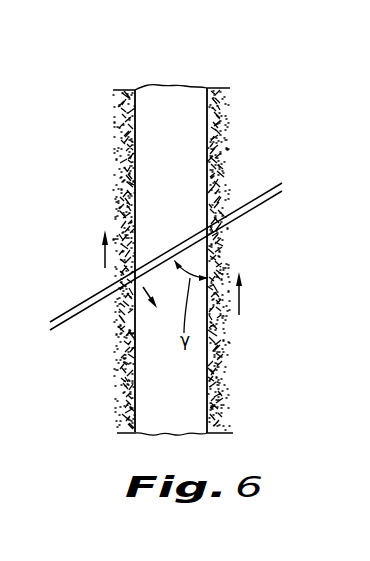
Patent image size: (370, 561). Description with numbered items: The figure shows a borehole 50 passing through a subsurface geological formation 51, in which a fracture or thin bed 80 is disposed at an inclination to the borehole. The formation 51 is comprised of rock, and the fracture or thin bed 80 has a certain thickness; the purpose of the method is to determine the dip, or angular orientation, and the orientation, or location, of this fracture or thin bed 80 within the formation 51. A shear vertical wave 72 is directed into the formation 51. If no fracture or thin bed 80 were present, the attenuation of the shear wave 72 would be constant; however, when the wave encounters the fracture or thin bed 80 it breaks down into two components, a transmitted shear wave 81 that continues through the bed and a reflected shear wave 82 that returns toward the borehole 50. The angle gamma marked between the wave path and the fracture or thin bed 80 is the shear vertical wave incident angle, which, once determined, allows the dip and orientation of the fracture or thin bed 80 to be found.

The borehole 50 is at (210, 398).
The subsurface geological formation 51 is at (217, 107).
The shear vertical wave 72 is at (242, 292).
The fracture or thin bed 80 is at (240, 200).
The transmitted shear wave 81 is at (103, 254).
The reflected shear wave 82 is at (143, 288).